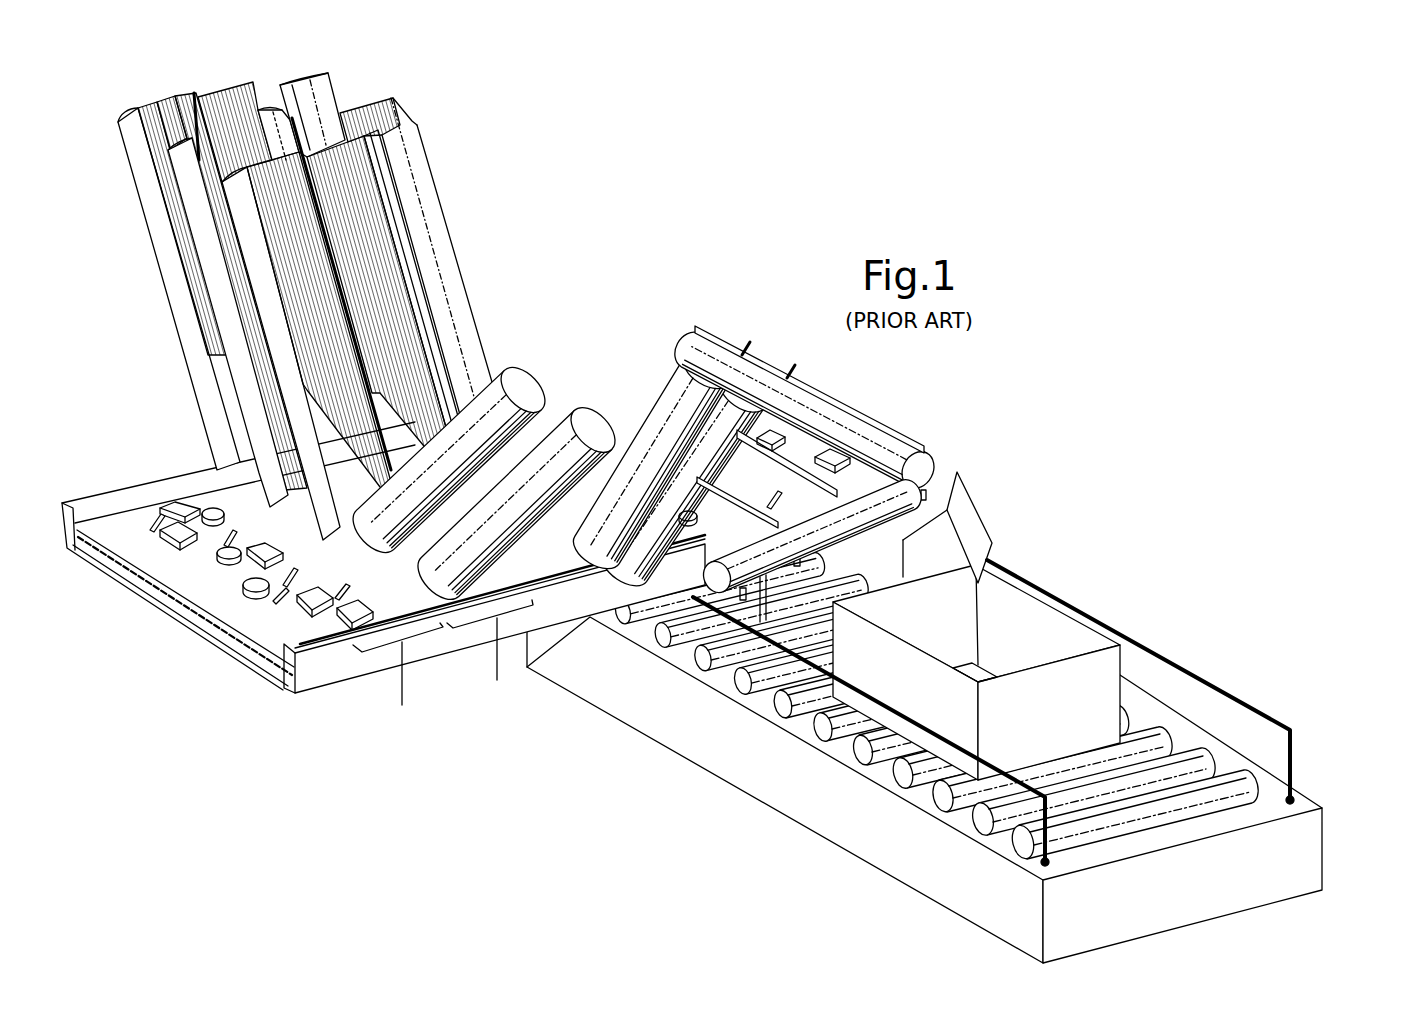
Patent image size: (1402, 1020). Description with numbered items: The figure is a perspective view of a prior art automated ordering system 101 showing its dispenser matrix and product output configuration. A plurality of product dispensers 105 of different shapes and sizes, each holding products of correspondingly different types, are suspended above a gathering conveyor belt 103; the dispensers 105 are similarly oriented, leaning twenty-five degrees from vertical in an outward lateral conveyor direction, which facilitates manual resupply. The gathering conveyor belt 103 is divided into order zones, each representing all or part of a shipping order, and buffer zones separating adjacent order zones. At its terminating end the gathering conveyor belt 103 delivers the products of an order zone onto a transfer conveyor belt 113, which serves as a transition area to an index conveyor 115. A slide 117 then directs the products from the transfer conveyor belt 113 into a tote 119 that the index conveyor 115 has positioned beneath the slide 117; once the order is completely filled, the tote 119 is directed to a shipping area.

The automated ordering system 101 is at (288, 752).
The gathering conveyor belt 103 is at (187, 585).
The product dispensers 105 is at (327, 83).
The transfer conveyor belt 113 is at (873, 427).
The index conveyor 115 is at (1310, 845).
The slide 117 is at (973, 527).
The tote 119 is at (1070, 633).